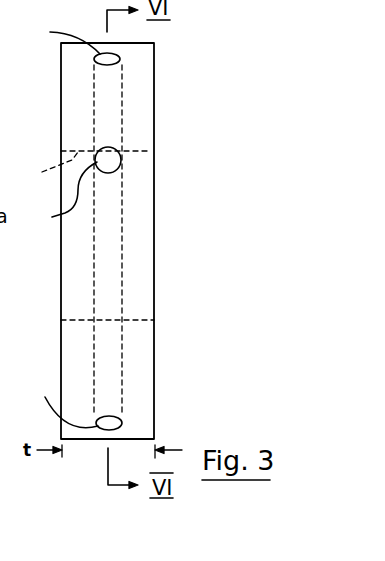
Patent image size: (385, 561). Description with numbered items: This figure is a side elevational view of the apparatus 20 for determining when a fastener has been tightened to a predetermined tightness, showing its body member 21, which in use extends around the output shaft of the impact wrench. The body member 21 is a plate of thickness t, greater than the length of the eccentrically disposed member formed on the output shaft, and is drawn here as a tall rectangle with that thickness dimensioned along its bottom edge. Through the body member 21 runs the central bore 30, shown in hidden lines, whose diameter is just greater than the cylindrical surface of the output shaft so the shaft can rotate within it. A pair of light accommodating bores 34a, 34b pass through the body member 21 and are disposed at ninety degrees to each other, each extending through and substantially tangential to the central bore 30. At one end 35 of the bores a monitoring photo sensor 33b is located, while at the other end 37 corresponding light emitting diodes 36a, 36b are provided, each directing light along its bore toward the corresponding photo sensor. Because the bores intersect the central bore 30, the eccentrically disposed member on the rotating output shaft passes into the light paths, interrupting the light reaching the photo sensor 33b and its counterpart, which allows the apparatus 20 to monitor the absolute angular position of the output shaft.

The apparatus 20 is at (117, 229).
The body member 21 is at (140, 245).
The central bore 30 is at (46, 169).
The photo sensor 33b is at (123, 422).
The light accommodating bore 34a is at (105, 148).
The light accommodating bore 34b is at (128, 305).
The one end of the bores 35 is at (58, 401).
The light emitting diode 36a is at (117, 170).
The light emitting diode 36b is at (107, 58).
The other end of the bores 37 is at (62, 123).